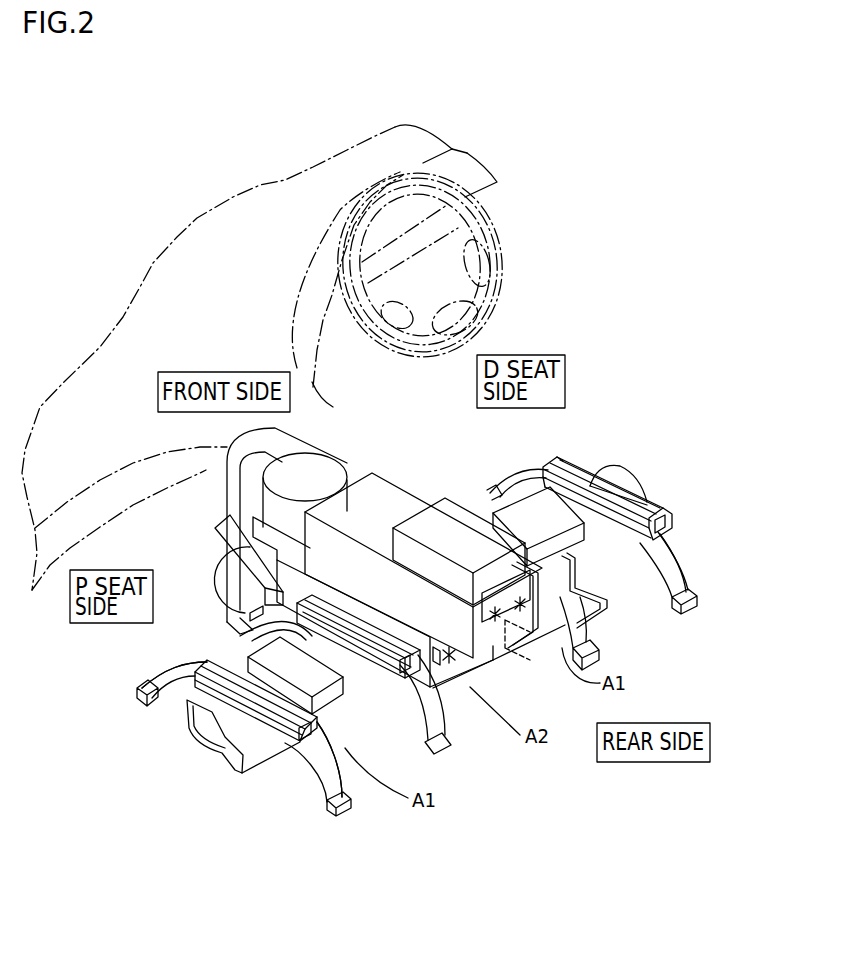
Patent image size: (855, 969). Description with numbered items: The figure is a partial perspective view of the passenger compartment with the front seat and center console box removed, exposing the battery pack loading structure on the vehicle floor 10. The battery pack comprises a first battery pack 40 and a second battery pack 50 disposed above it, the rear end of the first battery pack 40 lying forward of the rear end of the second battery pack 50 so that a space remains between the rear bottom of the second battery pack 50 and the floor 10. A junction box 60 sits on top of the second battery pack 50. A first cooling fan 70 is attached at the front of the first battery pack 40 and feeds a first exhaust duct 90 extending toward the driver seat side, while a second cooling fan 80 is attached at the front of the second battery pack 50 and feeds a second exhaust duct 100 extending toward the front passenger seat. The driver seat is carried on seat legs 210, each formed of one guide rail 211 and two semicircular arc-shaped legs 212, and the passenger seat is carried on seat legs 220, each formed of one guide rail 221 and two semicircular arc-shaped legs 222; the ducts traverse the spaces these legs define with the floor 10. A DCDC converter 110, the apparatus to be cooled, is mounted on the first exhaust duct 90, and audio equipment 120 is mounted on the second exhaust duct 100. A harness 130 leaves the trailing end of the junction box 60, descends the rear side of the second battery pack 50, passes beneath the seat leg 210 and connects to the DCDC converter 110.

The floor 10 is at (395, 762).
The first battery pack 40 is at (460, 668).
The second battery pack 50 is at (375, 490).
The junction box 60 is at (452, 510).
The first cooling fan 70 is at (230, 570).
The second cooling fan 80 is at (330, 470).
The first exhaust duct 90 is at (620, 478).
The second exhaust duct 100 is at (227, 717).
The DCDC converter 110 is at (520, 508).
The audio equipment 120 is at (267, 655).
The harness 130 is at (530, 657).
The seat leg 210 is at (585, 640).
The guide rail 211 is at (650, 495).
The semicircular arc-shaped leg 212 is at (673, 555).
The seat leg 220 is at (437, 727).
The guide rail 221 is at (257, 710).
The semicircular arc-shaped leg 222 is at (327, 807).